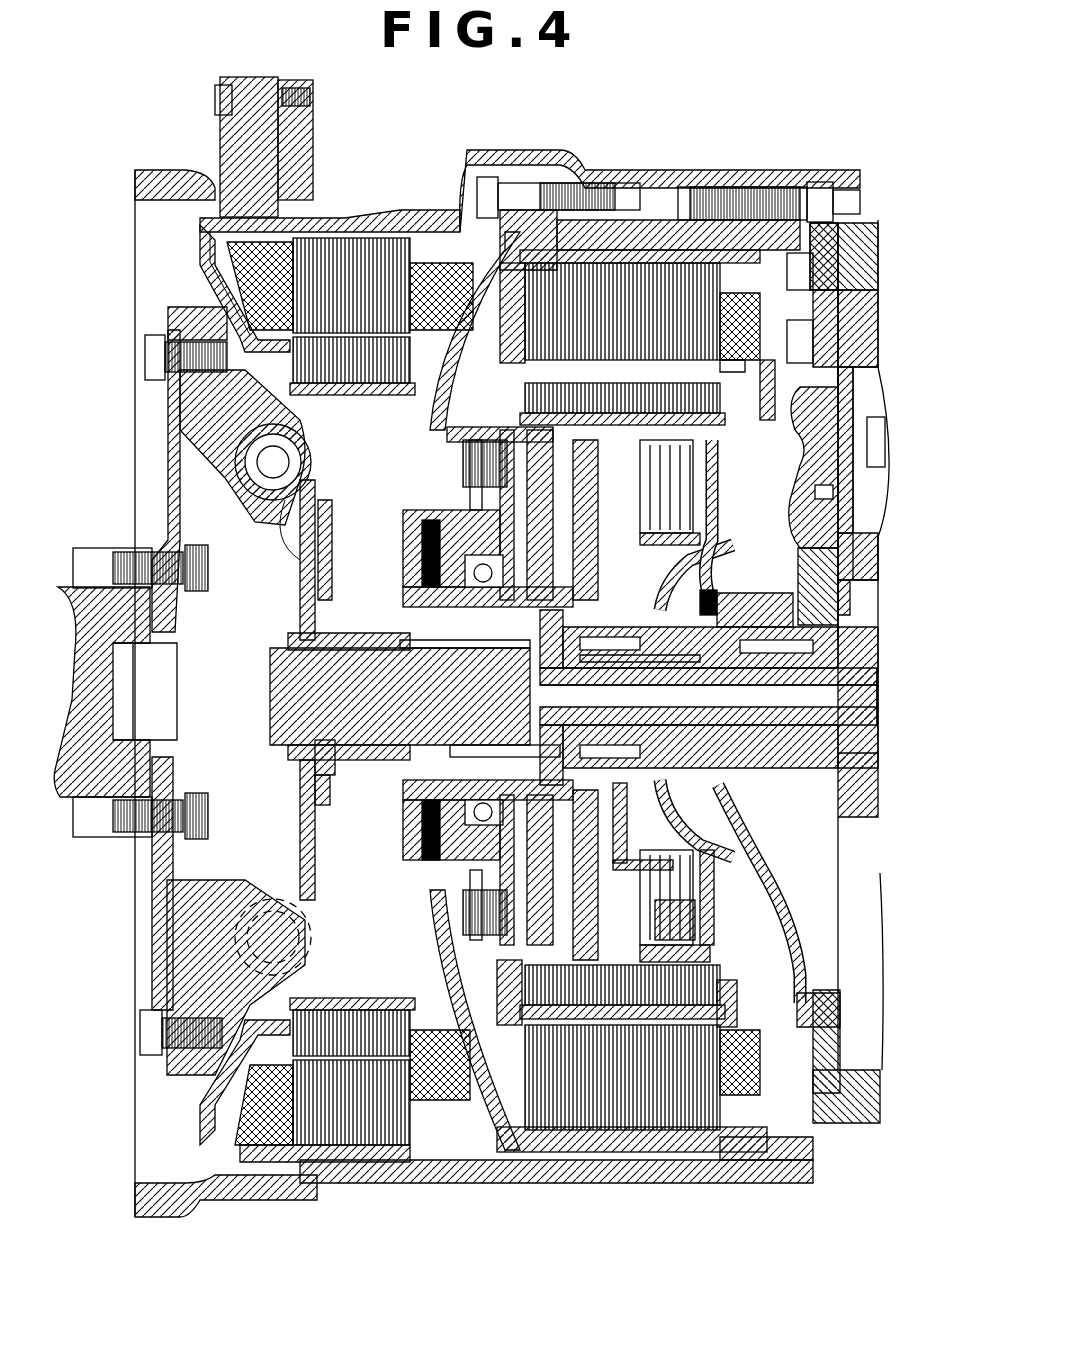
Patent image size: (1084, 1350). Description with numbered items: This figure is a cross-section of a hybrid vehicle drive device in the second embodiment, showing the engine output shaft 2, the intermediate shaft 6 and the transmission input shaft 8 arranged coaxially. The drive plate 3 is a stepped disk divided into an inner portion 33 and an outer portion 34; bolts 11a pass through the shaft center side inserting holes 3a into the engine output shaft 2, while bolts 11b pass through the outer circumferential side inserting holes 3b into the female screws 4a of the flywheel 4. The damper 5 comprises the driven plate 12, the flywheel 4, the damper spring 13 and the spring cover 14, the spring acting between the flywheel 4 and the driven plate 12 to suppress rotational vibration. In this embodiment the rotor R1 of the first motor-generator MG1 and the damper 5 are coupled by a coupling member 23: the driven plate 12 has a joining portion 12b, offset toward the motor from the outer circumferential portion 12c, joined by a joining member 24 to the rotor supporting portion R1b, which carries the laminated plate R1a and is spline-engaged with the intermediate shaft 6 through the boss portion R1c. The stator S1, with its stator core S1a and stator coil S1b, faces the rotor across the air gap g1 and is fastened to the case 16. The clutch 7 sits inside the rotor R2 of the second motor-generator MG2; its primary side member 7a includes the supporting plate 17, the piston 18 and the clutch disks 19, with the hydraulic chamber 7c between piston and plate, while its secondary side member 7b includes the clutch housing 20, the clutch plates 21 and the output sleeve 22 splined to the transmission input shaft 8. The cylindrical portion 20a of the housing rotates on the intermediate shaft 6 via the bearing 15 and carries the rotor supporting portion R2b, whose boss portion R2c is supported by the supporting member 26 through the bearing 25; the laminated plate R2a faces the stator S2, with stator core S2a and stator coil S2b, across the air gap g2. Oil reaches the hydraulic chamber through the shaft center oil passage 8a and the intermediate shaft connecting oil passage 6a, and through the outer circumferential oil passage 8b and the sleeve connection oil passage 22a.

The engine output shaft 2 is at (105, 580).
The drive plate 3 is at (168, 440).
The shaft center side inserting holes 3a is at (190, 838).
The outer circumferential side inserting holes 3b is at (145, 368).
The flywheel 4 is at (215, 455).
The female screws 4a is at (160, 1030).
The damper 5 is at (320, 430).
The intermediate shaft 6 is at (270, 698).
The intermediate shaft connecting oil passage 6a is at (530, 660).
The clutch 7 is at (740, 870).
The primary side member 7a is at (705, 838).
The secondary side member 7b is at (705, 935).
The hydraulic chamber 7c is at (610, 500).
The transmission input shaft 8 is at (760, 790).
The shaft center oil passage 8a is at (600, 690).
The outer circumferential oil passage 8b is at (845, 770).
The bolts 11a is at (190, 595).
The bolts 11b is at (150, 330).
The driven plate 12 is at (290, 855).
The joining portion 12b is at (300, 770).
The outer circumferential portion 12c is at (290, 540).
The damper spring 13 is at (335, 520).
The spring cover 14 is at (318, 460).
The bearing 15 is at (445, 745).
The case 16 is at (420, 1183).
The supporting plate 17 is at (640, 912).
The piston 18 is at (615, 895).
The clutch disks 19 is at (690, 888).
The clutch housing 20 is at (700, 960).
The cylindrical portion 20a is at (410, 795).
The clutch plates 21 is at (690, 905).
The output sleeve 22 is at (745, 600).
The sleeve connection oil passage 22a is at (740, 598).
The coupling member 23 is at (236, 815).
The joining member 24 is at (310, 790).
The bearing 25 is at (482, 822).
The supporting member 26 is at (500, 920).
The inner portion 33 is at (155, 888).
The outer portion 34 is at (162, 960).
The first motor-generator MG1 is at (475, 686).
The second motor-generator MG2 is at (630, 1170).
The stator S1 is at (311, 268).
The stator core S1a is at (310, 292).
The stator coil S1b is at (245, 260).
The stator S2 is at (545, 1135).
The stator core S2a is at (680, 1120).
The stator coil S2b is at (750, 1085).
The rotor R1 is at (410, 1005).
The laminated plate R1a is at (380, 1005).
The rotor supporting portion R1b is at (312, 800).
The boss portion R1c is at (310, 633).
The rotor R2 is at (510, 428).
The laminated plate R2a is at (760, 448).
The rotor supporting portion R2b is at (500, 480).
The boss portion R2c is at (415, 598).
The air gap g1 is at (475, 331).
The air gap g2 is at (720, 366).